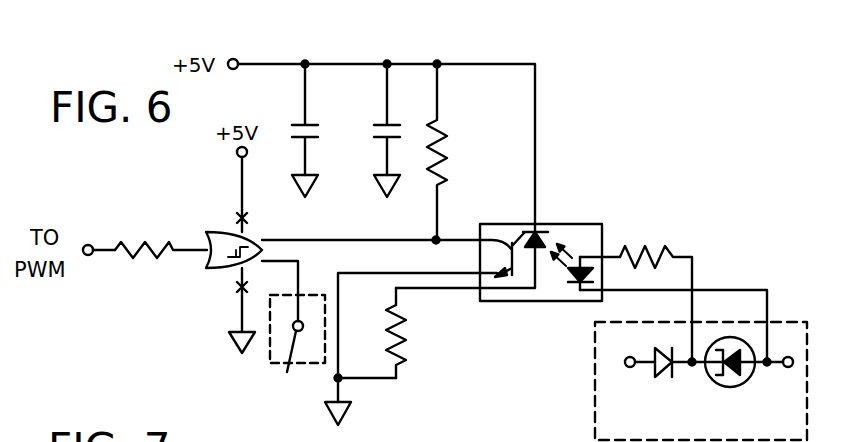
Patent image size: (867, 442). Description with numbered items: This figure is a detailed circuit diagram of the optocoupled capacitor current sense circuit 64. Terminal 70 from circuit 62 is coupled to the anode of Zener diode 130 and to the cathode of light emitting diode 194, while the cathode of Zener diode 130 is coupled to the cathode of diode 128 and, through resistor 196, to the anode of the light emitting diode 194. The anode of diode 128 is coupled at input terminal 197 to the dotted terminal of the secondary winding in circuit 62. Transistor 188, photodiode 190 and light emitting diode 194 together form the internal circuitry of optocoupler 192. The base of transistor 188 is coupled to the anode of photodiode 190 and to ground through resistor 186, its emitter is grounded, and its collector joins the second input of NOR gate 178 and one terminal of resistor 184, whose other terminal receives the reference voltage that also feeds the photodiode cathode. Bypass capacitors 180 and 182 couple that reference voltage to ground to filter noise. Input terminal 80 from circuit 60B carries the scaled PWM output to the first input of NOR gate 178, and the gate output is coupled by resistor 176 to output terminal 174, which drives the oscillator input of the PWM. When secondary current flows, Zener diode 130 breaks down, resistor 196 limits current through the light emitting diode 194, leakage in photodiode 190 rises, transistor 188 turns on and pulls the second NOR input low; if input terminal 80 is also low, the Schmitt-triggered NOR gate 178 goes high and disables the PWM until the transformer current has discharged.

The circuit 62 is at (790, 318).
The optocoupled capacitor current sense circuit 64 is at (477, 52).
The circuit 60B is at (270, 347).
The terminal 70 is at (788, 369).
The input terminal 80 is at (297, 351).
The diode 128 is at (661, 370).
The Zener diode 130 is at (735, 380).
The output terminal 174 is at (88, 256).
The resistor 176 is at (126, 236).
The NOR gate 178 is at (220, 233).
The capacitor 180 is at (292, 137).
The capacitor 182 is at (373, 137).
The resistor 184 is at (448, 138).
The resistor 186 is at (405, 323).
The transistor 188 is at (503, 223).
The photodiode 190 is at (541, 228).
The optocoupler 192 is at (586, 224).
The light emitting diode 194 is at (566, 270).
The resistor 196 is at (640, 243).
The input terminal 197 is at (628, 367).